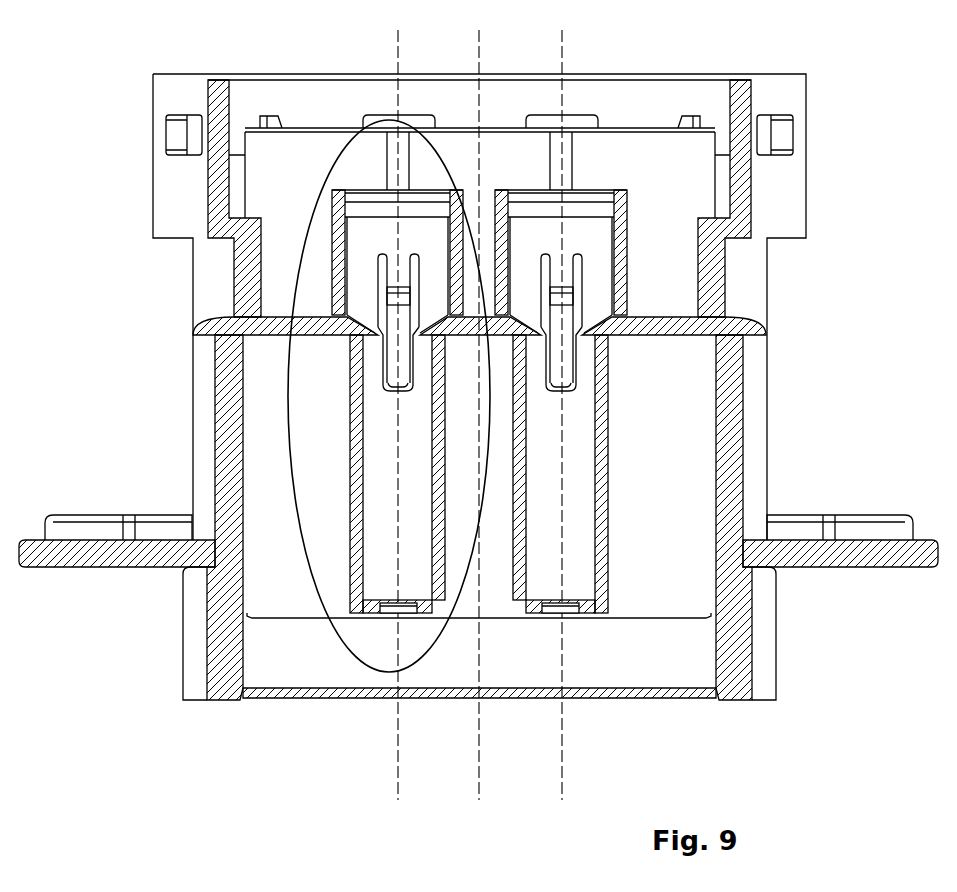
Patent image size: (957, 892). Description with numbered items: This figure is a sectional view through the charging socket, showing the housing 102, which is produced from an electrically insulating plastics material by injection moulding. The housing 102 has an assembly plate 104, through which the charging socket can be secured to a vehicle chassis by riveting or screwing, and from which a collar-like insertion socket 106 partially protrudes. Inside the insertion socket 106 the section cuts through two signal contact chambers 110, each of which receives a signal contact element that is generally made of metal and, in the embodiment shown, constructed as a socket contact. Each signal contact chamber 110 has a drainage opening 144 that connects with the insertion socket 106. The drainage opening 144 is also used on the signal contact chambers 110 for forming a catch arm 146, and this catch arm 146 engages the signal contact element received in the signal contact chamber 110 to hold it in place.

The housing 102 is at (430, 547).
The assembly plate 104 is at (860, 553).
The insertion socket 106 is at (740, 695).
The signal contact chamber 110 is at (590, 612).
The drainage opening 144 is at (567, 318).
The catch arm 146 is at (565, 293).